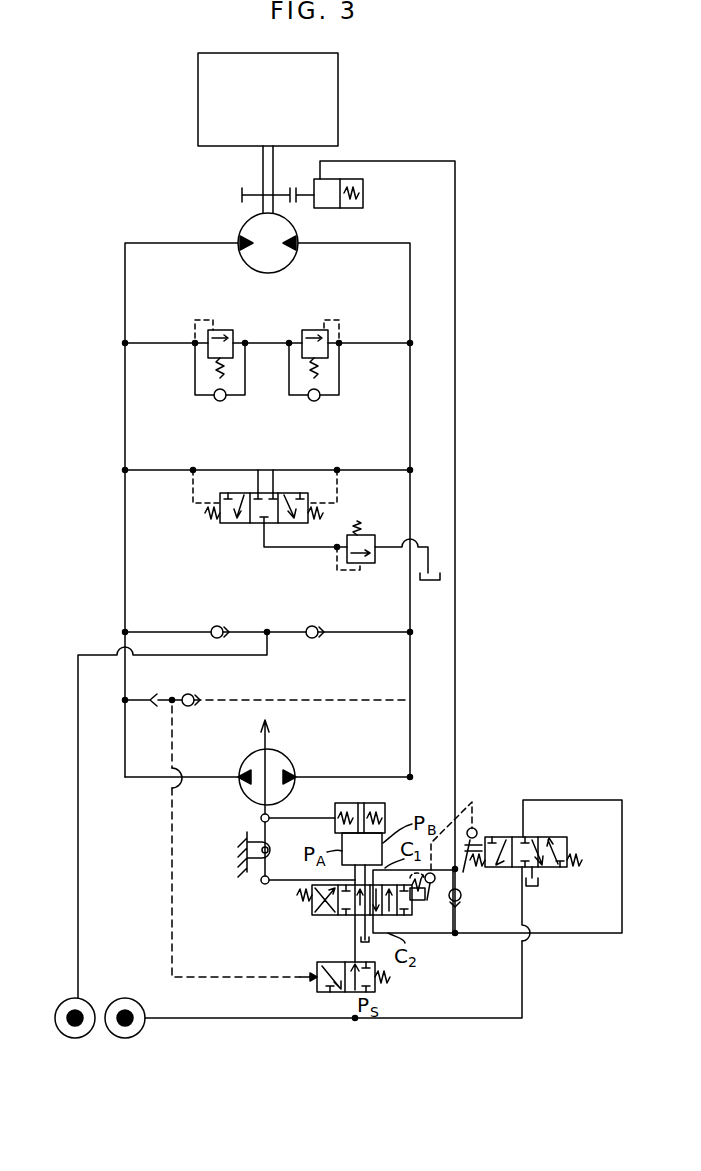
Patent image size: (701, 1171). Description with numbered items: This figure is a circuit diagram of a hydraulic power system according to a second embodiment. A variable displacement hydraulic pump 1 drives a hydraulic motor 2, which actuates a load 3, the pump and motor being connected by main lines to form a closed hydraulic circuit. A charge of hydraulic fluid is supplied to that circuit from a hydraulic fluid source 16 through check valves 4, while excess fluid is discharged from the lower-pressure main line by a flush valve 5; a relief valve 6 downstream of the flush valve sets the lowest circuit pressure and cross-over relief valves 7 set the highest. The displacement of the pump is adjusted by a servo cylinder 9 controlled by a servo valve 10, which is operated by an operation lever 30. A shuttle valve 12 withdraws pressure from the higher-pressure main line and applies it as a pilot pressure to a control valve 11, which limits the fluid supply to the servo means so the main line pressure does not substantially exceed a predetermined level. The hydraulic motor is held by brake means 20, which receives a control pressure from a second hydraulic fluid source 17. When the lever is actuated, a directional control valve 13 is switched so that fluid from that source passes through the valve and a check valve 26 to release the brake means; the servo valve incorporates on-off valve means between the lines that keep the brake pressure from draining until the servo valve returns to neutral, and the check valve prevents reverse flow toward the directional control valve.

The variable displacement hydraulic pump 1 is at (290, 762).
The hydraulic motor 2 is at (247, 224).
The load 3 is at (198, 107).
The check valves 4 is at (212, 628).
The flush valve 5 is at (232, 493).
The relief valve 6 is at (374, 563).
The cross-over relief valves 7 is at (226, 330).
The servo cylinder 9 is at (383, 803).
The servo valve 10 is at (304, 905).
The control valve 11 is at (317, 985).
The shuttle valve 12 is at (194, 678).
The directional control valve 13 is at (496, 837).
The hydraulic fluid source 16 is at (70, 1038).
The hydraulic fluid source 17 is at (120, 1038).
The brake means 20 is at (363, 193).
The check valve 26 is at (461, 898).
The operation lever 30 is at (422, 903).